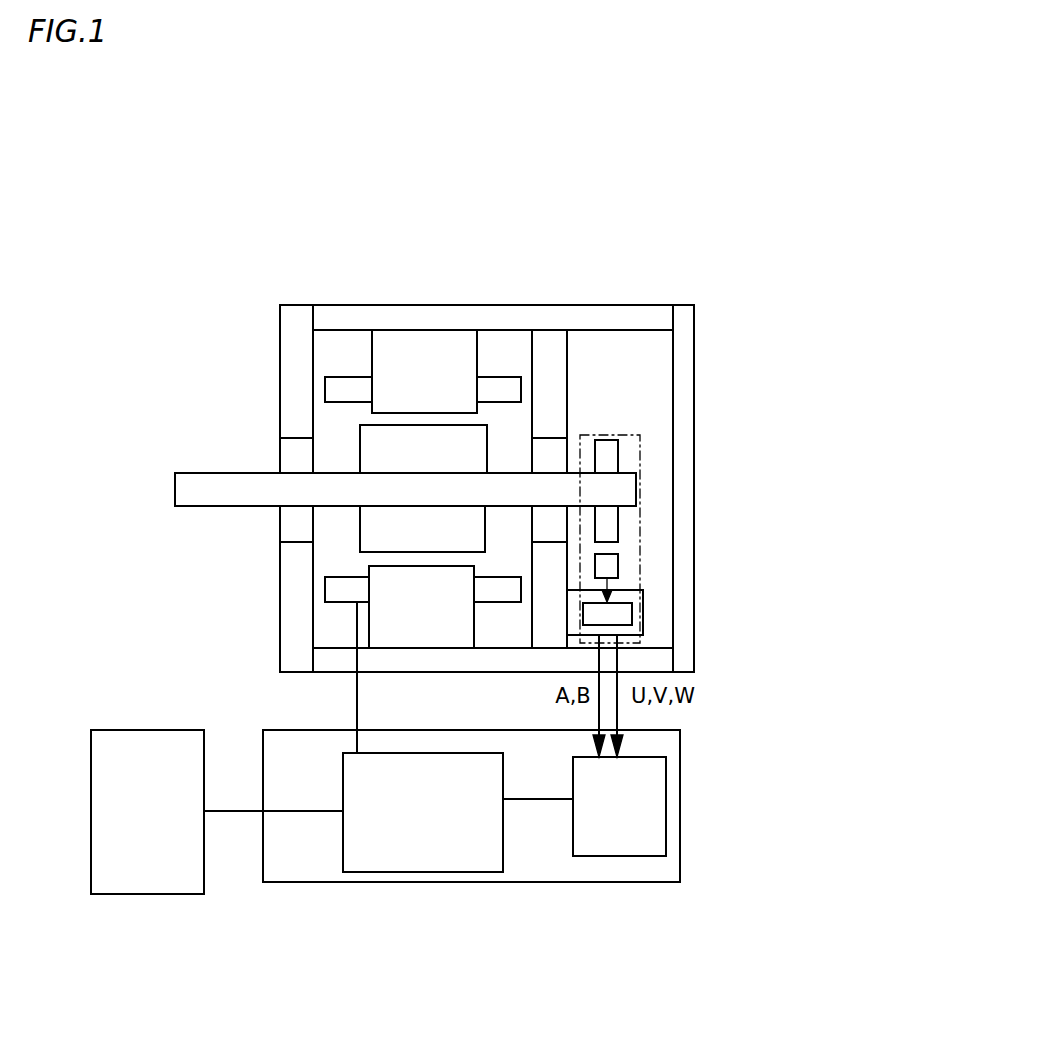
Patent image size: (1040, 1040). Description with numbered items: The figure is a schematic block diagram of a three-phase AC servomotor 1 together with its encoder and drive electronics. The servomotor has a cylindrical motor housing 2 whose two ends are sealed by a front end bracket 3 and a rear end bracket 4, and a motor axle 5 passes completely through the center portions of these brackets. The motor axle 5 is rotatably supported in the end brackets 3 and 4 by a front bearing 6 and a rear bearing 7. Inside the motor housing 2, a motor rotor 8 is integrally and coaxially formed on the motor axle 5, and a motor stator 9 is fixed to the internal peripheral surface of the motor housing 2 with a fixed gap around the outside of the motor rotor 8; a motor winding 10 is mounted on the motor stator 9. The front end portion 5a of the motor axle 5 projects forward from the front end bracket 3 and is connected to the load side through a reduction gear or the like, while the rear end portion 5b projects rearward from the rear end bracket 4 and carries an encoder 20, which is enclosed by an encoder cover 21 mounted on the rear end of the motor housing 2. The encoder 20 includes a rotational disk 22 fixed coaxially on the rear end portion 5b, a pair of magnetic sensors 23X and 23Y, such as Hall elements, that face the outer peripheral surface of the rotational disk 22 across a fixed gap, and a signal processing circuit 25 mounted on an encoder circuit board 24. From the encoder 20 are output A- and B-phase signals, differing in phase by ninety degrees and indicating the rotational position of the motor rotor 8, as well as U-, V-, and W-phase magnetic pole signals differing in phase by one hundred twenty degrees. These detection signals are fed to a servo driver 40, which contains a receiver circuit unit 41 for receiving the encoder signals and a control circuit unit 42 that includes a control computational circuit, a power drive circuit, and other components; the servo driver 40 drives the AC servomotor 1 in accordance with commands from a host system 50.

The AC servomotor 1 is at (611, 243).
The motor housing 2 is at (360, 315).
The end bracket 3 is at (297, 337).
The end bracket 4 is at (547, 383).
The motor axle 5 is at (452, 490).
The front end portion 5a is at (228, 491).
The rear end portion 5b is at (607, 489).
The bearing 6 is at (295, 455).
The bearing 7 is at (556, 453).
The motor rotor 8 is at (408, 440).
The motor stator 9 is at (398, 352).
The motor winding 10 is at (335, 380).
The encoder 20 is at (656, 502).
The encoder cover 21 is at (687, 318).
The rotational disk 22 is at (608, 533).
The magnetic sensor 23X is at (610, 565).
The magnetic sensor 23Y is at (606, 566).
The encoder circuit board 24 is at (630, 597).
The signal processing circuit 25 is at (612, 620).
The servo driver 40 is at (543, 882).
The receiver circuit unit 41 is at (627, 840).
The control circuit unit 42 is at (437, 833).
The host system 50 is at (113, 894).